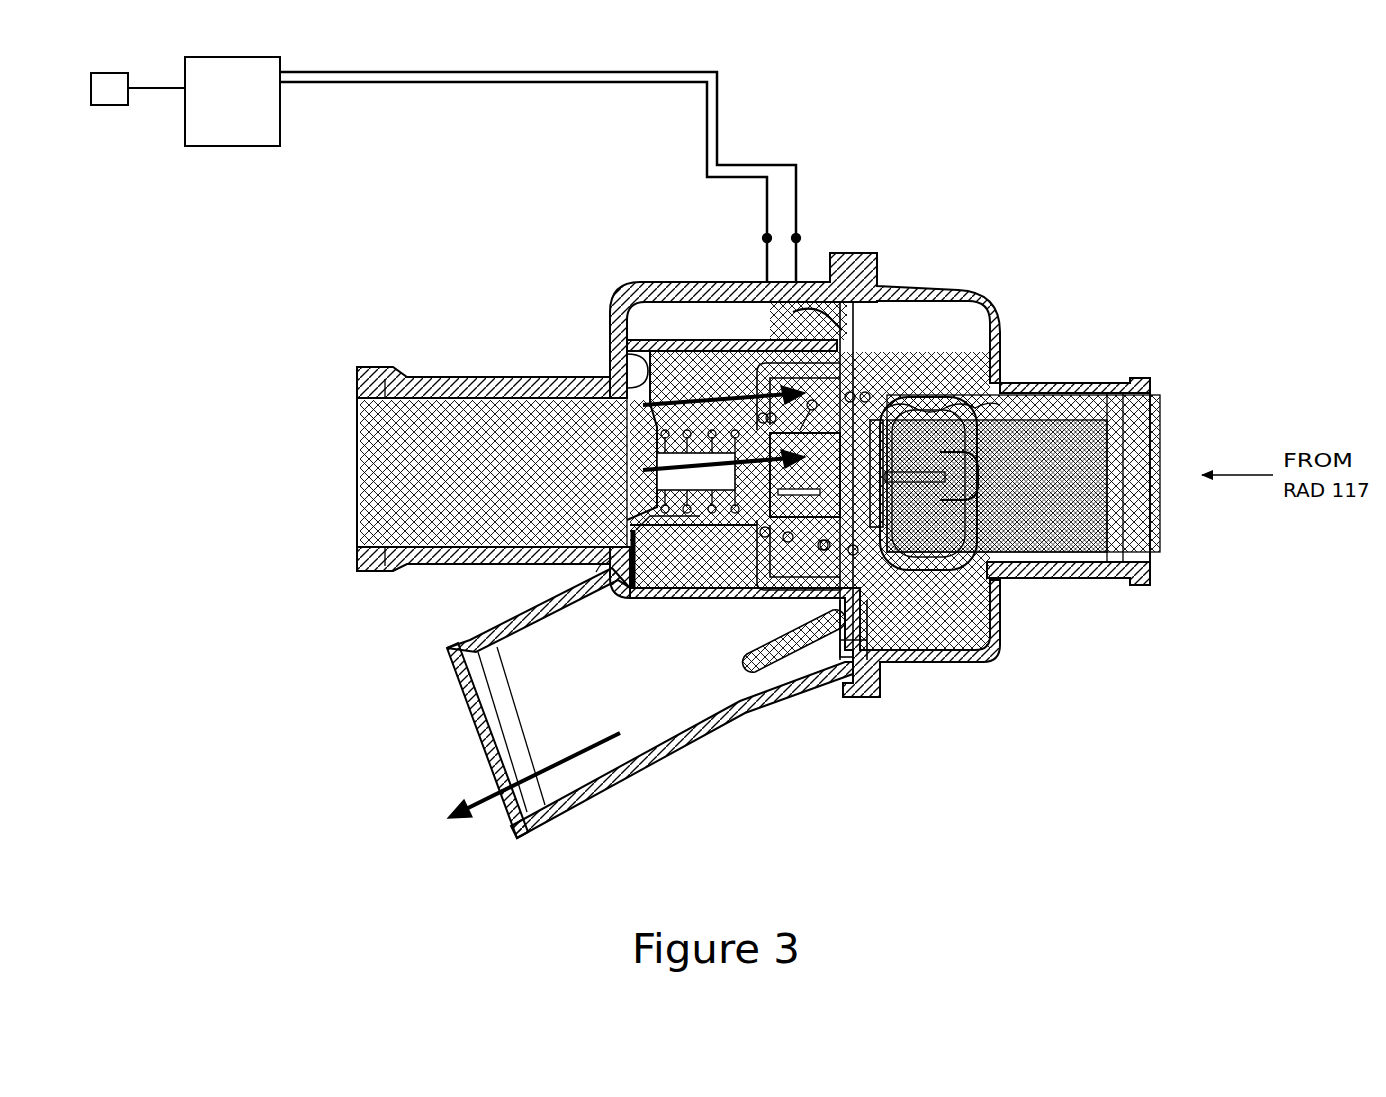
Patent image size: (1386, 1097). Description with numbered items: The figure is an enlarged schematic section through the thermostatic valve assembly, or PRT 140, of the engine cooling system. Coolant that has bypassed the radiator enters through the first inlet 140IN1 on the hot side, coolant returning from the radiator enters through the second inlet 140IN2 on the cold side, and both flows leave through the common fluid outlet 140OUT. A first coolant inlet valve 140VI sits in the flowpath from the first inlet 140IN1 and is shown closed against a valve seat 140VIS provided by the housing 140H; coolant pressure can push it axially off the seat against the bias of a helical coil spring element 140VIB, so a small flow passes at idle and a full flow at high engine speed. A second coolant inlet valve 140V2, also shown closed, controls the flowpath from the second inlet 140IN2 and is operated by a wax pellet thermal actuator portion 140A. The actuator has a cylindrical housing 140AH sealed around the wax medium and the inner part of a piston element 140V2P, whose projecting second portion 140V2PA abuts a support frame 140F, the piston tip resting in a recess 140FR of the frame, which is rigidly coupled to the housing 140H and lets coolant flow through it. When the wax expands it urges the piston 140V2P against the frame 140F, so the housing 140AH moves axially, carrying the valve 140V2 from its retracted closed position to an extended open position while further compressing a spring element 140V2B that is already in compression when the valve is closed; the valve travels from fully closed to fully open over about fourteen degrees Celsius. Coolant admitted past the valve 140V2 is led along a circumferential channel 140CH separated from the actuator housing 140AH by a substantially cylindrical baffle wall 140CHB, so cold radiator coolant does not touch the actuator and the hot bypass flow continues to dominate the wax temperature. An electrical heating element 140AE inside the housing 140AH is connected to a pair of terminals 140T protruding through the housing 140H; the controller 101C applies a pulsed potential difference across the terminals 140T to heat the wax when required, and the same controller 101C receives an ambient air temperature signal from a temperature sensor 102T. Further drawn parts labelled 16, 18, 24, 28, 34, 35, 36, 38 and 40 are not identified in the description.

The controller 101C is at (232, 101).
The temperature sensor 102T is at (112, 105).
The PRT (thermostatic valve assembly) 140 is at (1074, 173).
The housing 140H is at (661, 287).
The circumferential channel 140CH is at (663, 318).
The cylindrical baffle wall 140CHB is at (655, 338).
The electrical terminals 140T is at (793, 262).
The second coolant inlet valve 140V2 is at (845, 345).
The electrical heating element 140AE is at (870, 327).
The piston element 140V2P is at (918, 480).
The second portion of piston element 140V2PA is at (943, 407).
The shaft 24 is at (870, 380).
The recess 140FR is at (983, 472).
The second inlet 140IN2 is at (1212, 432).
The valve seat 140VIS is at (615, 385).
The first coolant inlet valve 140VI is at (622, 347).
The first inlet 140IN1 is at (308, 531).
The inlet pipe 16 is at (430, 547).
The helical coil spring element 140VIB is at (660, 520).
The seal 36 is at (612, 580).
The spring seat 38 is at (683, 512).
The spring retainer 40 is at (714, 527).
The spring 34 is at (717, 482).
The valve element 35 is at (815, 477).
The outlet pipe 18 is at (693, 743).
The pivot pin 28 is at (823, 550).
The thermal actuator portion 140A is at (808, 510).
The cylindrical housing 140AH is at (788, 537).
The spring element 140V2B is at (830, 548).
The support frame 140F is at (885, 473).
The fluid outlet 140OUT is at (480, 847).